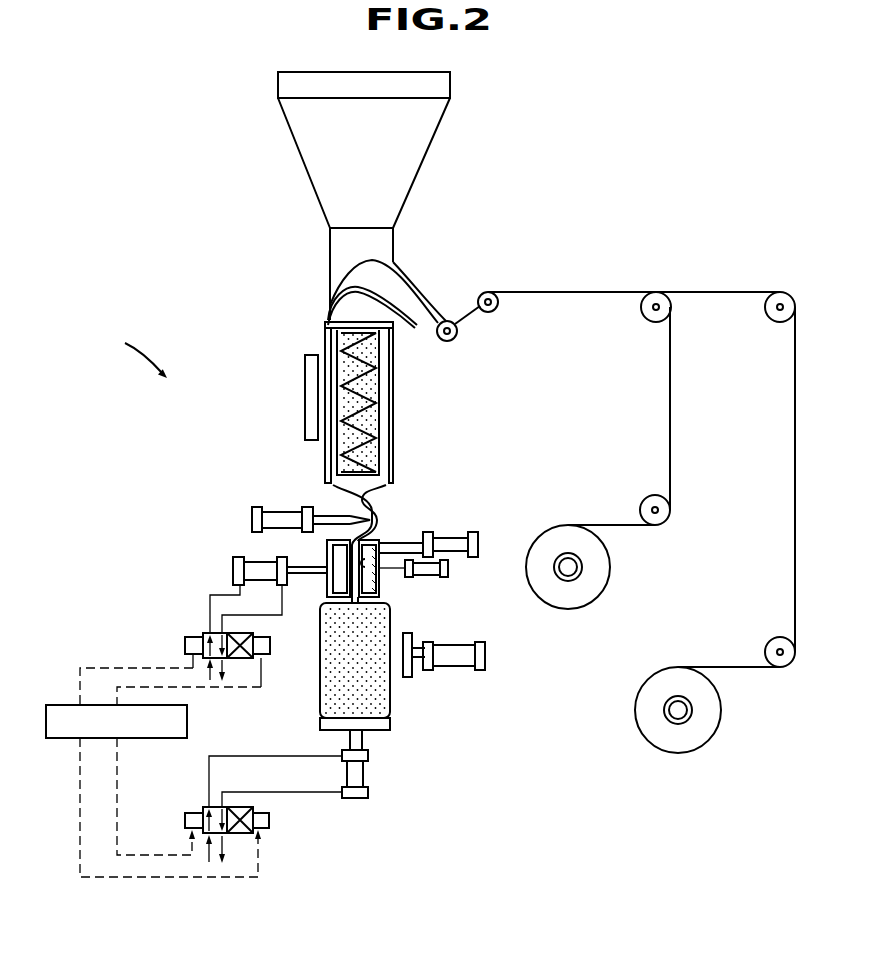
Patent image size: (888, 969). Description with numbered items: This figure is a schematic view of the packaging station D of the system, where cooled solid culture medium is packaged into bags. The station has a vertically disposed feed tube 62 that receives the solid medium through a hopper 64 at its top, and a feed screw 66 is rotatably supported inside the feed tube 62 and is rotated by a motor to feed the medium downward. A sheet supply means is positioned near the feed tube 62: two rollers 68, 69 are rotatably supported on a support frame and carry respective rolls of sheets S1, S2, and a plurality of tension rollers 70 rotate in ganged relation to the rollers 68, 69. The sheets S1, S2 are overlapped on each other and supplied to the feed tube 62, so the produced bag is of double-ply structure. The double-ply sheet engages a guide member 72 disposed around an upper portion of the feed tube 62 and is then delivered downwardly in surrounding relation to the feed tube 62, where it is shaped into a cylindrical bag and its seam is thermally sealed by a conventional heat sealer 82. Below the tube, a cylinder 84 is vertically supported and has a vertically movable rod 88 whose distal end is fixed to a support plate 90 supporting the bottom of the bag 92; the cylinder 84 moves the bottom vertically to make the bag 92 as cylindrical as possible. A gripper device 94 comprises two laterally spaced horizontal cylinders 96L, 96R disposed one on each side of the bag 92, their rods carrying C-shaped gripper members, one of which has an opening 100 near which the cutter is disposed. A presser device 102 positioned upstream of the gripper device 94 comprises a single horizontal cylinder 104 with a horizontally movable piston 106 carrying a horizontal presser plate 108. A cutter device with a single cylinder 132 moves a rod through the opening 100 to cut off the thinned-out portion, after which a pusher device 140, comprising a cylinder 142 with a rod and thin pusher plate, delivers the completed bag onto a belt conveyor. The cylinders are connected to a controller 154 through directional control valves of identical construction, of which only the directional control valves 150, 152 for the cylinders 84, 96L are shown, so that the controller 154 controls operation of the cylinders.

The hopper 64 is at (312, 167).
The tension rollers 70 is at (451, 318).
The guide member 72 is at (405, 333).
The sheet S1 is at (670, 398).
The sheet S2 is at (795, 474).
The roller 68 is at (603, 572).
The roller 69 is at (702, 718).
The feed tube 62 is at (396, 402).
The feed screw 66 is at (362, 413).
The heat sealer 82 is at (305, 395).
The packaging station D is at (120, 352).
The presser device 102 is at (261, 488).
The horizontal cylinder 104 is at (272, 507).
The piston 106 is at (323, 525).
The presser plate 108 is at (324, 490).
The gripper device 94 is at (347, 533).
The cylinder 96L is at (262, 560).
The cylinder 96R is at (447, 532).
The opening 100 is at (380, 567).
The cylinder 132 is at (440, 577).
The bag 92 is at (392, 688).
The support plate 90 is at (378, 730).
The rod 88 is at (348, 743).
The cylinder 84 is at (360, 799).
The pusher device 140 is at (488, 664).
The cylinder 142 is at (467, 669).
The directional control valve 152 is at (185, 645).
The directional control valve 150 is at (268, 820).
The controller 154 is at (187, 722).